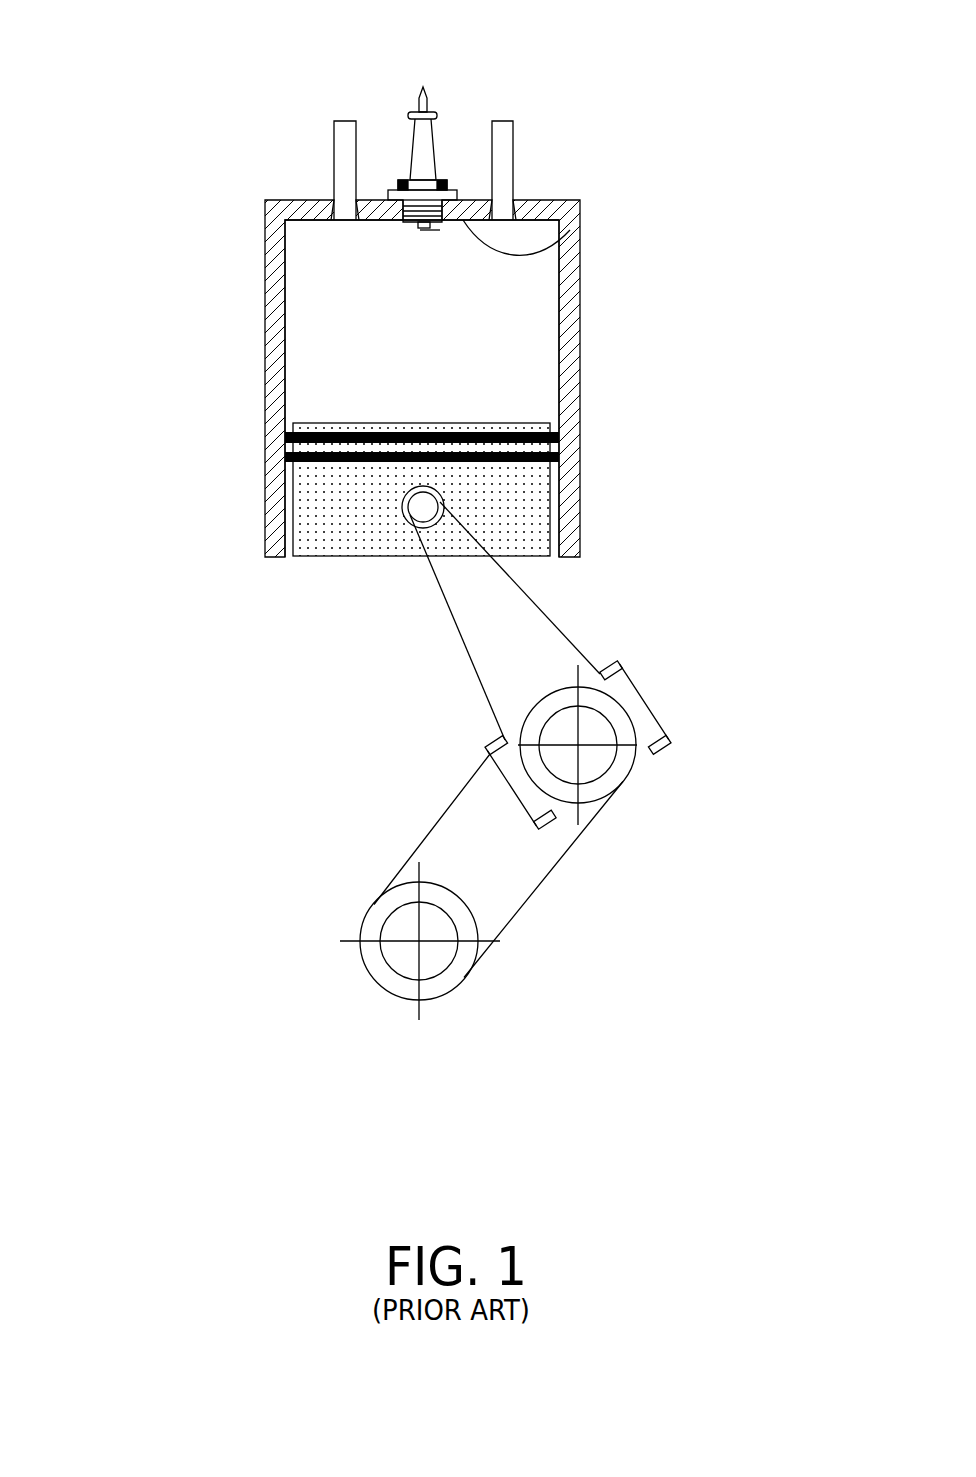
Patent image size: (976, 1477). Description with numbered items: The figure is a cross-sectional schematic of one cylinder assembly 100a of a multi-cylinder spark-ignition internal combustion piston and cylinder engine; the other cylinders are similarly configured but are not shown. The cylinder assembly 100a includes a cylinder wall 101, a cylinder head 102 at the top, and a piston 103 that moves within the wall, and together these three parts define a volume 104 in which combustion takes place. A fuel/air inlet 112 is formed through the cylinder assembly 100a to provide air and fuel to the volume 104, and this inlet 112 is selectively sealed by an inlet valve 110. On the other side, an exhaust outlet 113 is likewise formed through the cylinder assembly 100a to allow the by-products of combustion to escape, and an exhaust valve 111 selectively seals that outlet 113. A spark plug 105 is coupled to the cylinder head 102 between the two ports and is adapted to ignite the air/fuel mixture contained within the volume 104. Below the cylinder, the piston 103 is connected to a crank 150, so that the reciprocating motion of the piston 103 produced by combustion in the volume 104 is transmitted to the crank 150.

The cylinder assembly 100a is at (103, 112).
The cylinder wall 101 is at (579, 362).
The cylinder head 102 is at (570, 230).
The piston 103 is at (525, 473).
The volume 104 is at (315, 270).
The spark plug 105 is at (423, 87).
The inlet valve 110 is at (334, 145).
The exhaust valve 111 is at (513, 135).
The fuel/air inlet 112 is at (331, 198).
The exhaust outlet 113 is at (515, 198).
The crank 150 is at (687, 727).